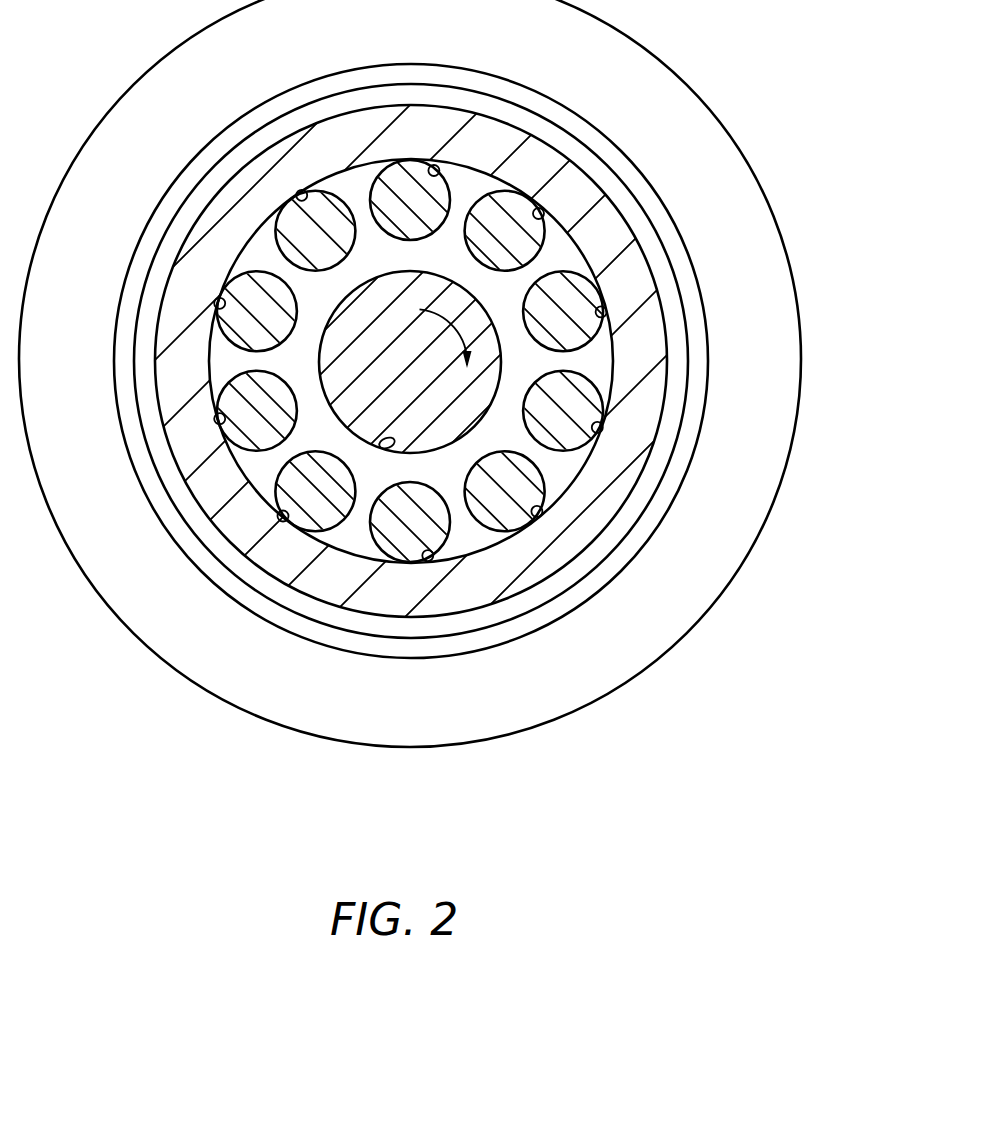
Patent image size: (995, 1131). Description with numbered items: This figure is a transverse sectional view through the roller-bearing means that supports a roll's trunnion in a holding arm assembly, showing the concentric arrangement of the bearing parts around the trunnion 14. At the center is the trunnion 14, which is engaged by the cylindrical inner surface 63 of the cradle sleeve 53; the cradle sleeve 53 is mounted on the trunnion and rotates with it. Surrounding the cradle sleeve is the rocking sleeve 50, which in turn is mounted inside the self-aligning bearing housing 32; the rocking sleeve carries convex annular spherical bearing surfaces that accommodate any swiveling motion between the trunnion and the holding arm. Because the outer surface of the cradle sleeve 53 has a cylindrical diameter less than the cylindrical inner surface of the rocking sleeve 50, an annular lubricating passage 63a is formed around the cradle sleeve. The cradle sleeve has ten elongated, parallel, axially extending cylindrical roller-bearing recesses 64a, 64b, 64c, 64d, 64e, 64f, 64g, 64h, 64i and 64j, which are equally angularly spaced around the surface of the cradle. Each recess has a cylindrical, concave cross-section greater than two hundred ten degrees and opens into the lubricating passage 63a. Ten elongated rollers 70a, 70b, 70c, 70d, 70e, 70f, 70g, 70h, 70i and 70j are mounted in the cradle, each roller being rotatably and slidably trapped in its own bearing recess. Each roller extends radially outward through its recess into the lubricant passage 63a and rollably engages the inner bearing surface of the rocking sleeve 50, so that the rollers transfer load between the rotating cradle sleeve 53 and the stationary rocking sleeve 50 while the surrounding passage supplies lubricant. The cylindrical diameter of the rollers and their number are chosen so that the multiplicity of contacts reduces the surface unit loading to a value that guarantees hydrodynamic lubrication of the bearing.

The trunnion 14 is at (487, 368).
The self-aligning bearing housing 32 is at (744, 175).
The rocking sleeve 50 is at (647, 338).
The cradle sleeve 53 is at (540, 455).
The cylindrical inner surface 63 is at (395, 447).
The lubricating passage 63a is at (634, 192).
The roller-bearing recess 64a is at (403, 548).
The roller-bearing recess 64b is at (287, 515).
The roller-bearing recess 64c is at (215, 417).
The roller-bearing recess 64d is at (215, 304).
The roller-bearing recess 64e is at (280, 215).
The roller-bearing recess 64f is at (431, 168).
The roller-bearing recess 64g is at (510, 215).
The roller-bearing recess 64h is at (580, 297).
The roller-bearing recess 64i is at (600, 414).
The roller-bearing recess 64j is at (548, 505).
The elongated roller 70a is at (432, 560).
The elongated roller 70b is at (268, 518).
The elongated roller 70c is at (233, 430).
The elongated roller 70d is at (233, 327).
The elongated roller 70e is at (300, 197).
The elongated roller 70f is at (404, 160).
The elongated roller 70g is at (540, 210).
The elongated roller 70h is at (607, 305).
The elongated roller 70i is at (604, 421).
The elongated roller 70j is at (545, 514).